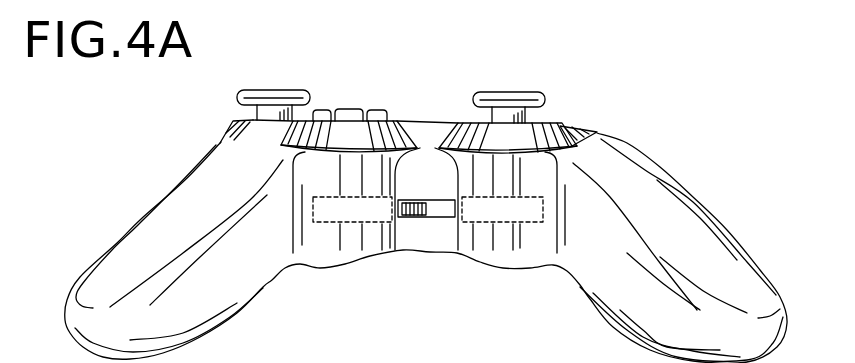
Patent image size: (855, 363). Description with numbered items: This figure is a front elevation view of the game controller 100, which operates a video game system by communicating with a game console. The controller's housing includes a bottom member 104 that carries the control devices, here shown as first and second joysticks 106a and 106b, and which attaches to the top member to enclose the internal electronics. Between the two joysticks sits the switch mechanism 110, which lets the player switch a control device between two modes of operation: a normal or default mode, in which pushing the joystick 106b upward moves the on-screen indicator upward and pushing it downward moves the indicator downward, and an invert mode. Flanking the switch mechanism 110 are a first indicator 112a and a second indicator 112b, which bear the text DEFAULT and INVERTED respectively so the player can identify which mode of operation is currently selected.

The game controller 100 is at (717, 180).
The bottom member 104 is at (568, 130).
The first joystick 106a is at (350, 107).
The second joystick 106b is at (523, 93).
The switch mechanism 110 is at (418, 218).
The first indicator 112a is at (343, 223).
The second indicator 112b is at (500, 223).